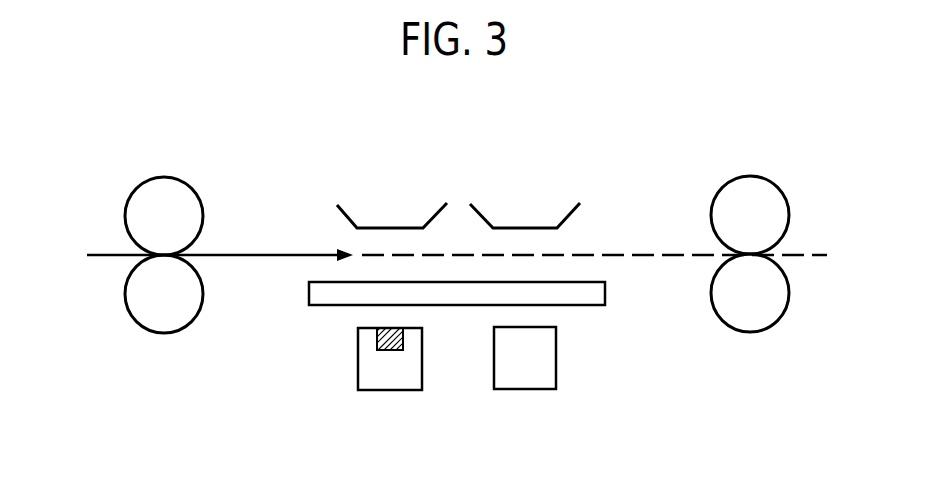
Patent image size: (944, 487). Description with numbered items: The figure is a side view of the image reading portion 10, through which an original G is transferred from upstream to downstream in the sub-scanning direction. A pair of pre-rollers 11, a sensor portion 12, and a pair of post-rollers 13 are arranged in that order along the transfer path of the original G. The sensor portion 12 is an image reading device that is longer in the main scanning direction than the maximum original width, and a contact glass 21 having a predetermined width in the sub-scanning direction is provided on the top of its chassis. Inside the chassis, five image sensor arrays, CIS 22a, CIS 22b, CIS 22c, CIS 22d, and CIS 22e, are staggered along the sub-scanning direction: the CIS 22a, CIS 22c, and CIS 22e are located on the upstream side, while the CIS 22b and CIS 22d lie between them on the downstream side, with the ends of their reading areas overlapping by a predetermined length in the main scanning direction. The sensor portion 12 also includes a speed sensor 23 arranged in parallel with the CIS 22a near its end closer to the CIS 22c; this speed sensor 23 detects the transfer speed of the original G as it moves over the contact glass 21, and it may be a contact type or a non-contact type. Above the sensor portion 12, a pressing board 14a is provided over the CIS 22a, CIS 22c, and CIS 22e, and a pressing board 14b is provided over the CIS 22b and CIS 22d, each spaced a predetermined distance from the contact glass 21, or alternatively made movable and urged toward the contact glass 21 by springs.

The image reading portion 10 is at (635, 140).
The pair of pre-rollers 11 is at (123, 187).
The sensor portion 12 is at (435, 384).
The pair of post-rollers 13 is at (789, 180).
The pressing board 14a is at (387, 228).
The pressing board 14b is at (519, 228).
The contact glass 21 is at (577, 305).
The CIS 22a is at (389, 387).
The CIS 22b is at (563, 387).
The CIS 22c is at (389, 387).
The CIS 22d is at (572, 418).
The CIS 22e is at (388, 390).
The speed sensor 23 is at (375, 340).
The original G is at (265, 252).